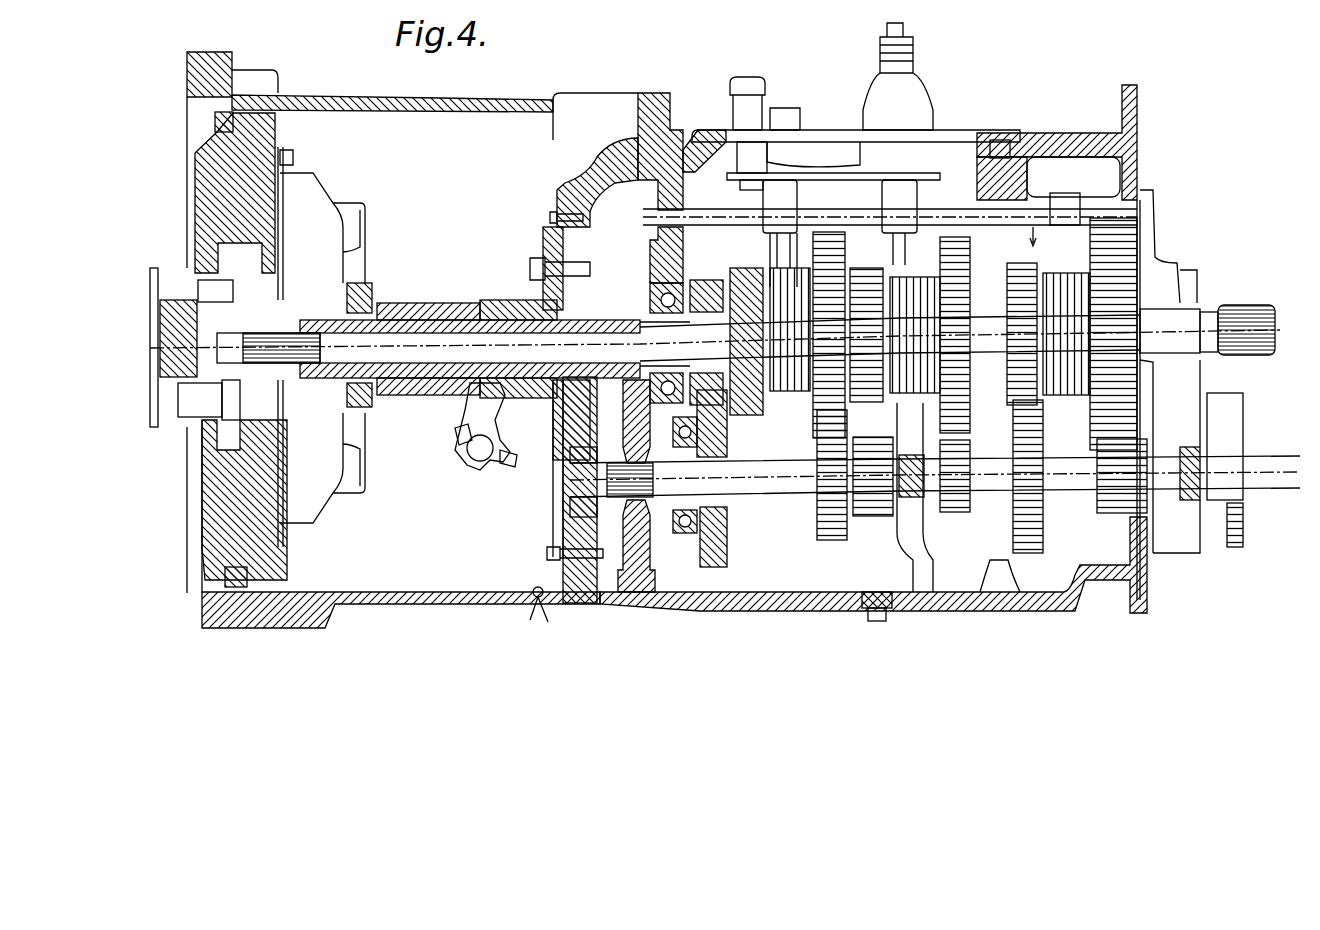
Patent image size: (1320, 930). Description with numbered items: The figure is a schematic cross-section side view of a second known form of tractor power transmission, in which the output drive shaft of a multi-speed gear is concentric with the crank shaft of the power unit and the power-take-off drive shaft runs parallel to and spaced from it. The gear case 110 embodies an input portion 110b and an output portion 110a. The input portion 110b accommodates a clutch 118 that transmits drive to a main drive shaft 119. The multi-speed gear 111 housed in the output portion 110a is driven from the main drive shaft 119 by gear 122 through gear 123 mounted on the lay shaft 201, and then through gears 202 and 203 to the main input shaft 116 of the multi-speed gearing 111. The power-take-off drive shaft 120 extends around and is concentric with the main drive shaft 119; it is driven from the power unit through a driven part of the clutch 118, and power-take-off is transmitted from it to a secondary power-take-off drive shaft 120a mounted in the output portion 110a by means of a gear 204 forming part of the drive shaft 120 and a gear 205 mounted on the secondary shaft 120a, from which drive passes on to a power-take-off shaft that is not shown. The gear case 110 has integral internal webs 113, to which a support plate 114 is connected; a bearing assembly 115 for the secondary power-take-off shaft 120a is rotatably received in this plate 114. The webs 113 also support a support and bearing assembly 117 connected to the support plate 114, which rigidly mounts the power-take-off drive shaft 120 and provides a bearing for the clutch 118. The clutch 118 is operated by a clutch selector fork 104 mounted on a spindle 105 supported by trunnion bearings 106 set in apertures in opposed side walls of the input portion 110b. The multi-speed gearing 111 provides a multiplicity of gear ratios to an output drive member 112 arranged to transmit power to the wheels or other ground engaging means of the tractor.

The clutch selector fork 104 is at (465, 385).
The spindle 105 is at (478, 455).
The trunnion bearings 106 is at (468, 455).
The gear case 110 is at (648, 606).
The output portion 110a is at (778, 600).
The input portion 110b is at (490, 597).
The multi-speed gear 111 is at (1040, 207).
The output drive member 112 is at (1207, 315).
The internal webs 113 is at (603, 170).
The support plate 114 is at (565, 512).
The bearing assembly 115 is at (553, 475).
The main input shaft 116 is at (837, 297).
The support and bearing assembly 117 is at (510, 395).
The clutch 118 is at (331, 190).
The main drive shaft 119 is at (373, 338).
The power-take-off drive shaft 120 is at (490, 312).
The secondary power-take-off drive shaft 120a is at (903, 483).
The gear 122 is at (693, 287).
The gear 123 is at (730, 543).
The lay shaft 201 is at (787, 503).
The gear 202 is at (750, 430).
The gear 203 is at (750, 407).
The gear 204 is at (620, 305).
The gear 205 is at (622, 460).